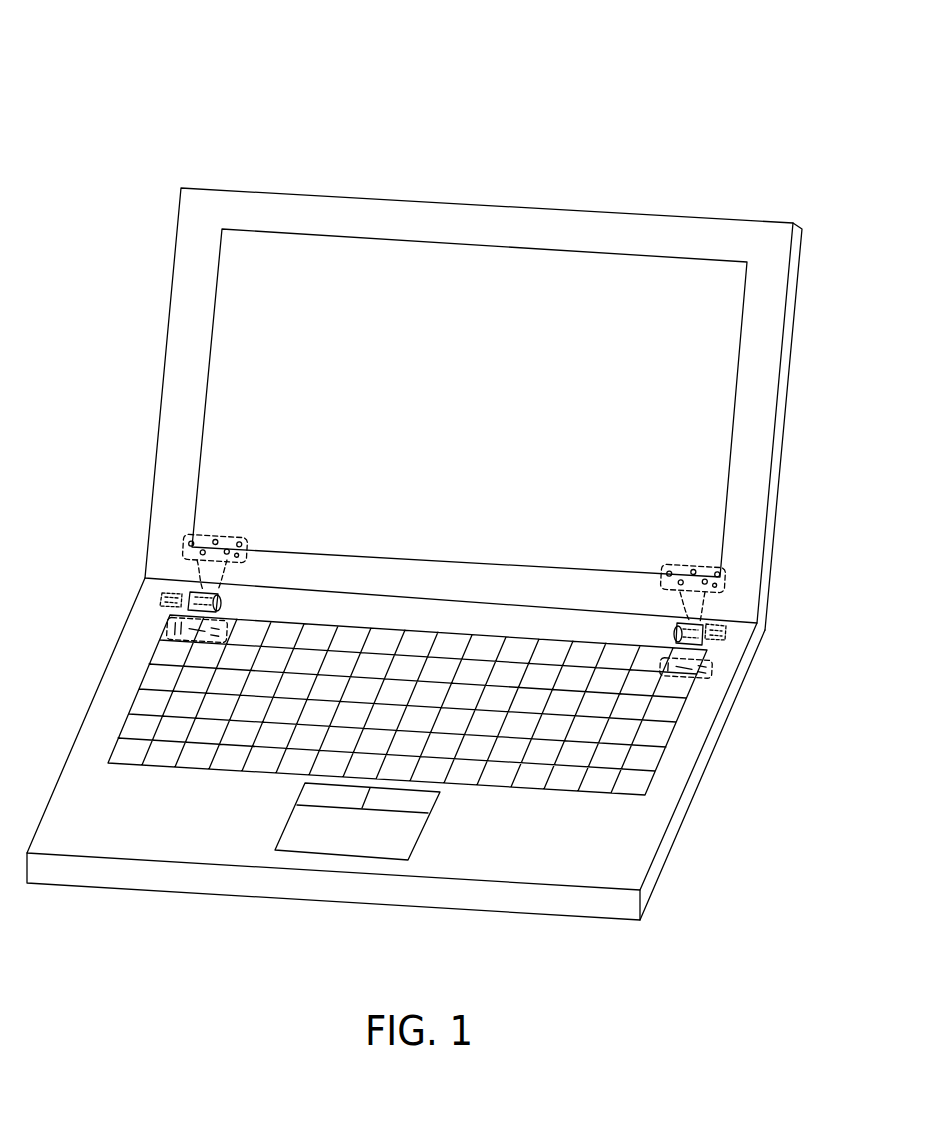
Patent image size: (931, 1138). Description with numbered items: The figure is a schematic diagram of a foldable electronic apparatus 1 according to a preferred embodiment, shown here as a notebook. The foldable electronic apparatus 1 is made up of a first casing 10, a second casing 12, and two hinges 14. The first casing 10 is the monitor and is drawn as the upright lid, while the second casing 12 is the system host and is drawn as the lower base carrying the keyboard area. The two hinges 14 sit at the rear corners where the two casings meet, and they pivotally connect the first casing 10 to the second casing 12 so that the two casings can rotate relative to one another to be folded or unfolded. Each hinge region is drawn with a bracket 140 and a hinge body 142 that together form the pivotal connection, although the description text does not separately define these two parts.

The foldable electronic apparatus 1 is at (235, 82).
The first casing 10 is at (512, 217).
The second casing 12 is at (643, 837).
The hinges 14 is at (182, 527).
The hinge bracket 140 is at (187, 552).
The hinge body 142 is at (165, 634).